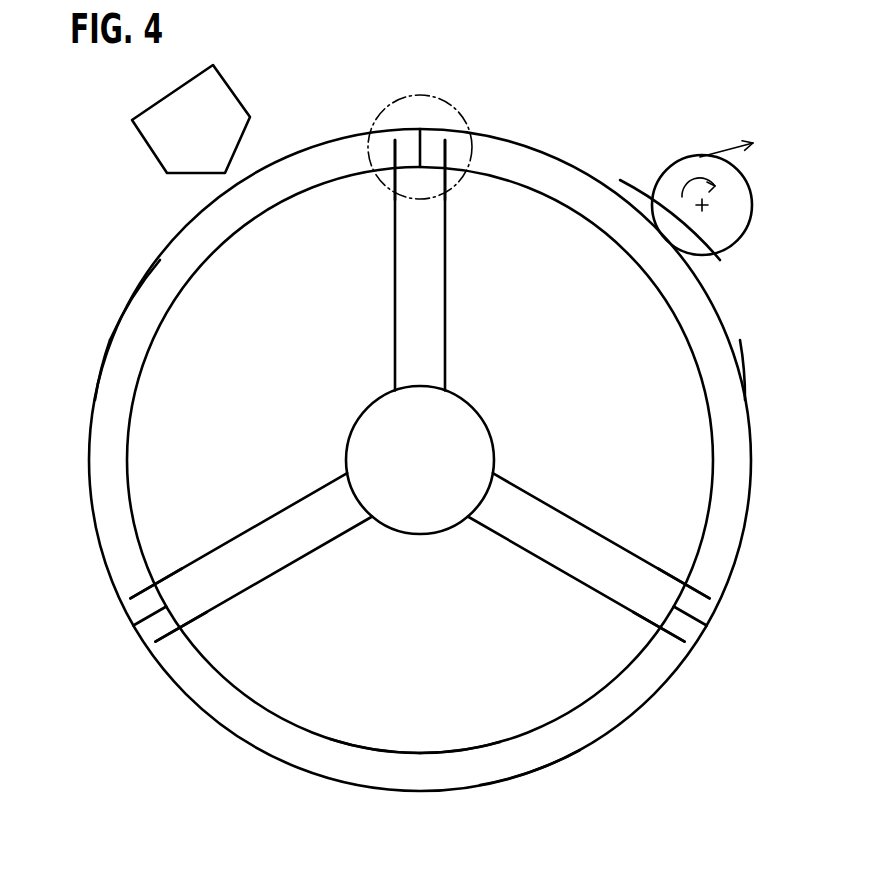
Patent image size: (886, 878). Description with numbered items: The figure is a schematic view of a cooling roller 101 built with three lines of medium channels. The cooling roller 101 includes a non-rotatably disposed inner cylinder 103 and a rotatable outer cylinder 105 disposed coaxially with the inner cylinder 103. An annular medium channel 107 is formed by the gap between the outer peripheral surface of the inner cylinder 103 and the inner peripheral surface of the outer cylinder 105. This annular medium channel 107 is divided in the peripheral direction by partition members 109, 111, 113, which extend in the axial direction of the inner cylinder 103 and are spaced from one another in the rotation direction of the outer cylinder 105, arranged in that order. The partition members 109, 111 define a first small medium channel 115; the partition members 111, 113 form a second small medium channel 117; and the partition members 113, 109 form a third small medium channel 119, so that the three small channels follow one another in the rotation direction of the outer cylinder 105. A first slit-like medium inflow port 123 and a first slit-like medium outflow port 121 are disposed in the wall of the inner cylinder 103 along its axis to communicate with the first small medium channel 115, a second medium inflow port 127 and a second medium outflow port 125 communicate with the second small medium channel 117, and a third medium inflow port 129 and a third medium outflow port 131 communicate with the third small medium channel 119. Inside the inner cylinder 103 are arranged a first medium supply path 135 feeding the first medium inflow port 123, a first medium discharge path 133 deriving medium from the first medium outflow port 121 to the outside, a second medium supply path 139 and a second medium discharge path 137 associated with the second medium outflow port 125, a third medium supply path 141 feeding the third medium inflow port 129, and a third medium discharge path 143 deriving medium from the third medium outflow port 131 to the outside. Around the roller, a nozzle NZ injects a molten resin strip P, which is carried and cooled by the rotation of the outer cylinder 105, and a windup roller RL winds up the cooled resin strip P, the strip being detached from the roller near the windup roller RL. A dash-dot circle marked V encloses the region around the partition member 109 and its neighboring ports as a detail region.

The cooling roller 101 is at (620, 120).
The inner cylinder 103 is at (367, 748).
The outer cylinder 105 is at (535, 767).
The annular medium channel 107 is at (741, 410).
The partition member 109 is at (418, 147).
The partition member 111 is at (150, 618).
The partition member 113 is at (700, 612).
The first small medium channel 115 is at (138, 300).
The second small medium channel 117 is at (462, 770).
The third small medium channel 119 is at (732, 373).
The first medium outflow port 121 is at (392, 153).
The first medium inflow port 123 is at (137, 587).
The second medium outflow port 125 is at (170, 637).
The second medium inflow port 127 is at (675, 637).
The third medium inflow port 129 is at (447, 153).
The third medium outflow port 131 is at (712, 587).
The first medium discharge path 133 is at (395, 292).
The first medium supply path 135 is at (255, 528).
The second medium discharge path 137 is at (290, 567).
The second medium supply path 139 is at (558, 567).
The third medium supply path 141 is at (447, 300).
The third medium discharge path 143 is at (585, 520).
The nozzle NZ is at (152, 155).
The resin strip P is at (120, 318).
The windup roller RL is at (735, 242).
The detail view region V is at (457, 106).